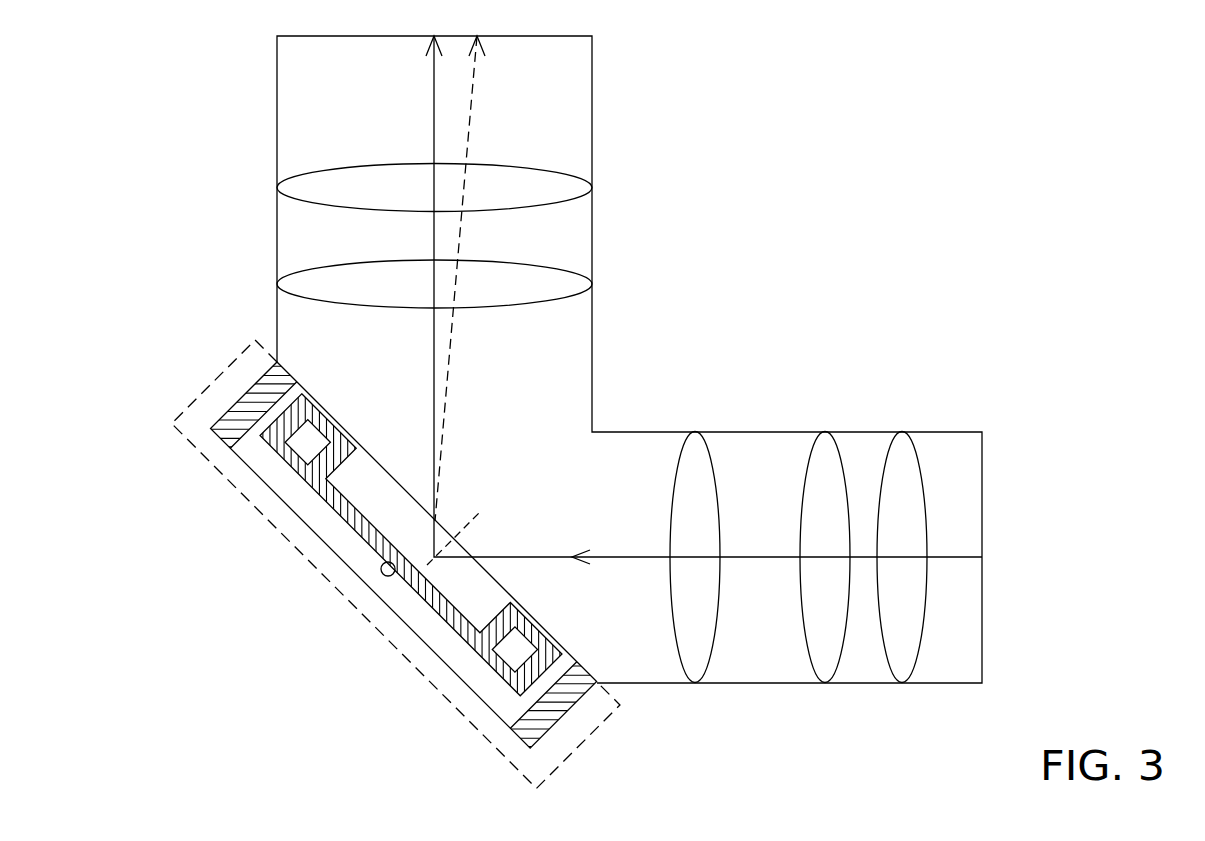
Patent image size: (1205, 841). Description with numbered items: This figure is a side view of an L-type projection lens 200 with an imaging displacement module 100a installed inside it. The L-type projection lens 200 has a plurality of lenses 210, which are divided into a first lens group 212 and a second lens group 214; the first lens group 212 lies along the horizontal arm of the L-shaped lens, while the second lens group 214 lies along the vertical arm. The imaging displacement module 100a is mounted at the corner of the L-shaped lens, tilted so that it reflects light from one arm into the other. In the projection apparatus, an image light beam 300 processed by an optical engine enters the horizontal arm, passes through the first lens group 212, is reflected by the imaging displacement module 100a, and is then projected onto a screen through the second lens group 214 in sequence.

The imaging displacement module 100a is at (204, 394).
The L-type projection lens 200 is at (629, 359).
The lenses 210 is at (629, 359).
The first lens group 212 is at (898, 401).
The second lens group 214 is at (613, 185).
The image light beam 300 is at (955, 557).